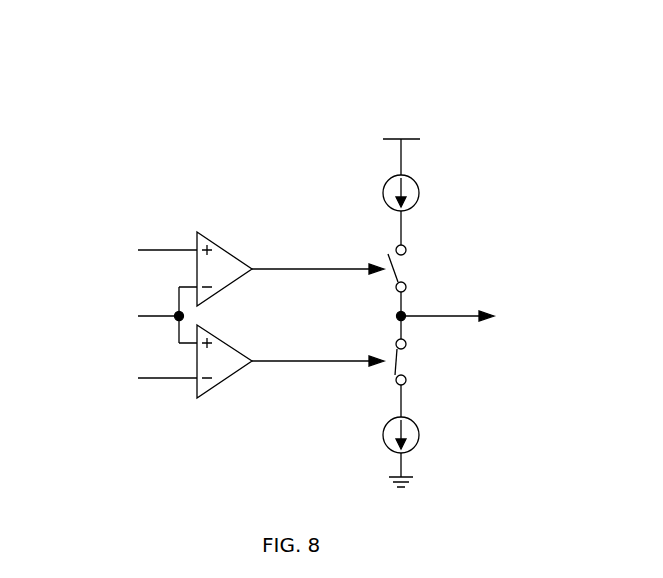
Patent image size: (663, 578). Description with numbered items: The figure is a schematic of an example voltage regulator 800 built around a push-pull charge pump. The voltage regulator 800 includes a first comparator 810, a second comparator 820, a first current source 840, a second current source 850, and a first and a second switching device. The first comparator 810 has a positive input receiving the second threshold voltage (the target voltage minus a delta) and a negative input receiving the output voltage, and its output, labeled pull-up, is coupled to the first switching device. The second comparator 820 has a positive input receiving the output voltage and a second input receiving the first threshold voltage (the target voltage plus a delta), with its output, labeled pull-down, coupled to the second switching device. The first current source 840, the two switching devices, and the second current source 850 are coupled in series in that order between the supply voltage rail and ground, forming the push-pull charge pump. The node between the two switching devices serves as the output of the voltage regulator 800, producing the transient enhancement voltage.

The voltage regulator 800 is at (193, 98).
The first comparator 810 is at (214, 237).
The second comparator 820 is at (214, 392).
The first current source 840 is at (414, 181).
The second current source 850 is at (414, 423).